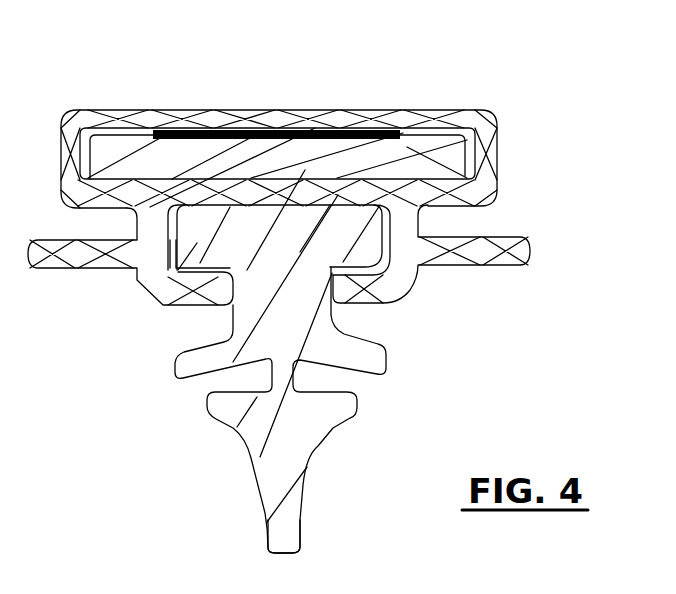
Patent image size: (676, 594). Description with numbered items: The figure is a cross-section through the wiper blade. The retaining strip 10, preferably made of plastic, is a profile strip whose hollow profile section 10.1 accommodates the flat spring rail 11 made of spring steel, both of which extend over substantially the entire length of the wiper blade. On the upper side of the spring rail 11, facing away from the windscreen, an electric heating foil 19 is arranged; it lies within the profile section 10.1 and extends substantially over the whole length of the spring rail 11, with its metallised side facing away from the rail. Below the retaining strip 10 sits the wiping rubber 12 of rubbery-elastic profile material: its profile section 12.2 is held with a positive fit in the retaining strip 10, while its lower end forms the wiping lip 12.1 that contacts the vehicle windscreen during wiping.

The retaining strip 10 is at (258, 107).
The profile section 10.1 is at (498, 135).
The spring rail 11 is at (104, 152).
The wiping rubber 12 is at (167, 390).
The wiping lip 12.1 is at (285, 534).
The profile section 12.2 is at (157, 304).
The heating foil 19 is at (362, 134).